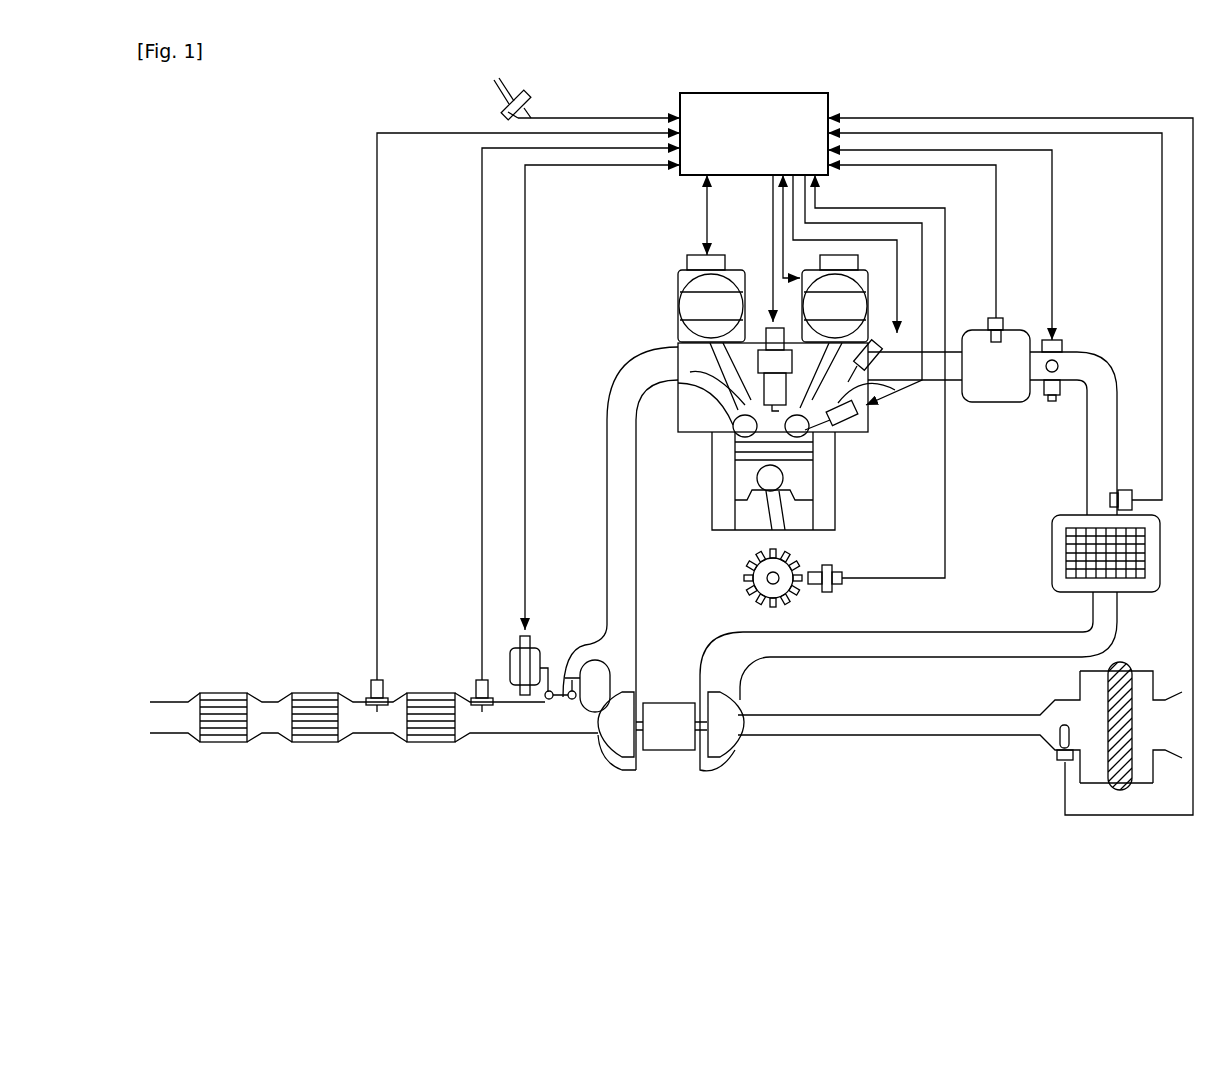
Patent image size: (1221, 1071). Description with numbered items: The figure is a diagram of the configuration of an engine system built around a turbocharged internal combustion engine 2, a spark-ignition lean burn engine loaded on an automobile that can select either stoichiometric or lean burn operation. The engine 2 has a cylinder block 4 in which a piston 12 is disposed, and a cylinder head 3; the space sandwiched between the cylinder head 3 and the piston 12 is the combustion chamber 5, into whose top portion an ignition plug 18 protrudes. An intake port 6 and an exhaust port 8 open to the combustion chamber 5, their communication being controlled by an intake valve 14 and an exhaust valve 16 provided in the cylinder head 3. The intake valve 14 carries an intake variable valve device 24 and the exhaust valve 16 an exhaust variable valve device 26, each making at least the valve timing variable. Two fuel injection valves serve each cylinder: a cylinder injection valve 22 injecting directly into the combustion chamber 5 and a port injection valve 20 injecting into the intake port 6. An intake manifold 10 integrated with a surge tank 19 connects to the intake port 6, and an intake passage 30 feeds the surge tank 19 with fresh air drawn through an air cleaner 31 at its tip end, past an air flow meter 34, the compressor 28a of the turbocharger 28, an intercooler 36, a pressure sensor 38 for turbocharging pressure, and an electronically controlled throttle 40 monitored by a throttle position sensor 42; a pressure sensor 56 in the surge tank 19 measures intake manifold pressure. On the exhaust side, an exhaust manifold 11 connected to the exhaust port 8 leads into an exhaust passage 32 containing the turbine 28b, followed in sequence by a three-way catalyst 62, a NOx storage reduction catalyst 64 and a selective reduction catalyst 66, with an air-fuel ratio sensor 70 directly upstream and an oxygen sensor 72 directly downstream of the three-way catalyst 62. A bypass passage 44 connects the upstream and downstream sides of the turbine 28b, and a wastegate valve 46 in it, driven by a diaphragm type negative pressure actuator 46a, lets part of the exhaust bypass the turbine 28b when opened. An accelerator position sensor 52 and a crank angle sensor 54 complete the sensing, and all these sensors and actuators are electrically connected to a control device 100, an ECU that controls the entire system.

The control device 100 is at (810, 93).
The accelerator position sensor 52 is at (526, 102).
The internal combustion engine 2 is at (646, 274).
The exhaust variable valve device 26 is at (678, 302).
The intake variable valve device 24 is at (866, 268).
The cylinder head 3 is at (676, 430).
The exhaust port 8 is at (705, 385).
The port injection valve 20 is at (900, 350).
The exhaust valve 16 is at (740, 436).
The intake valve 14 is at (800, 438).
The ignition plug 18 is at (762, 340).
The intake port 6 is at (858, 420).
The cylinder injection valve 22 is at (860, 408).
The cylinder block 4 is at (712, 520).
The piston 12 is at (735, 490).
The combustion chamber 5 is at (790, 487).
The exhaust manifold 11 is at (628, 394).
The exhaust passage 32 is at (605, 488).
The selective reduction catalyst 66 is at (225, 693).
The NOx storage reduction catalyst 64 is at (320, 693).
The three-way catalyst 62 is at (422, 693).
The oxygen sensor 72 is at (375, 712).
The air-fuel ratio sensor 70 is at (482, 712).
The negative pressure actuator 46a is at (540, 650).
The wastegate valve 46 is at (568, 700).
The bypass passage 44 is at (592, 632).
The turbocharger 28 is at (673, 700).
The turbine 28b is at (615, 760).
The compressor 28a is at (742, 710).
The intake passage 30 is at (1112, 368).
The air cleaner 31 is at (1120, 666).
The air flow meter 34 is at (1057, 757).
The intercooler 36 is at (1052, 556).
The pressure sensor 38 is at (1122, 491).
The surge tank 19 is at (990, 402).
The pressure sensor 56 is at (1003, 322).
The throttle 40 is at (1060, 360).
The throttle position sensor 42 is at (1050, 401).
The intake manifold 10 is at (928, 378).
The crank angle sensor 54 is at (842, 576).